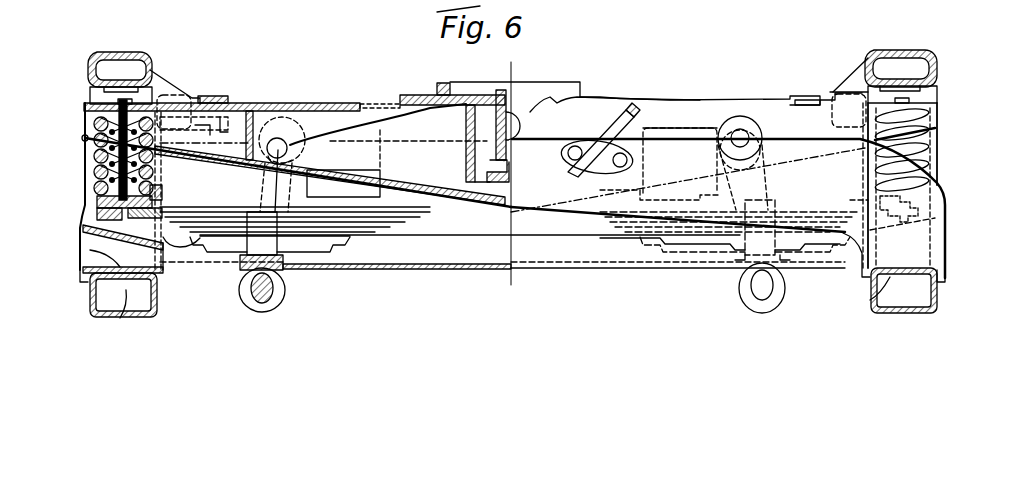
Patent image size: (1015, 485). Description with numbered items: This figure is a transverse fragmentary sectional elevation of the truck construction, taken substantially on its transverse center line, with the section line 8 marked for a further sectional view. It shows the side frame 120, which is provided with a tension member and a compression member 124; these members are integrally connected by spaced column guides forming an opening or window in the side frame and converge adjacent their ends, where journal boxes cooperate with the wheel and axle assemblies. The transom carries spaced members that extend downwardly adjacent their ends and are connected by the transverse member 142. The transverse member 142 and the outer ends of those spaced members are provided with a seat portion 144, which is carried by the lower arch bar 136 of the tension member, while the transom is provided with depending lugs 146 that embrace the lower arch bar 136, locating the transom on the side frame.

The side frame 120 is at (126, 52).
The compression member 124 is at (930, 54).
The lower arch bar 136 is at (90, 302).
The transverse member 142 is at (126, 290).
The seat portion 144 is at (80, 248).
The depending lugs 146 is at (80, 280).
The section line 8- 8 is at (292, 85).